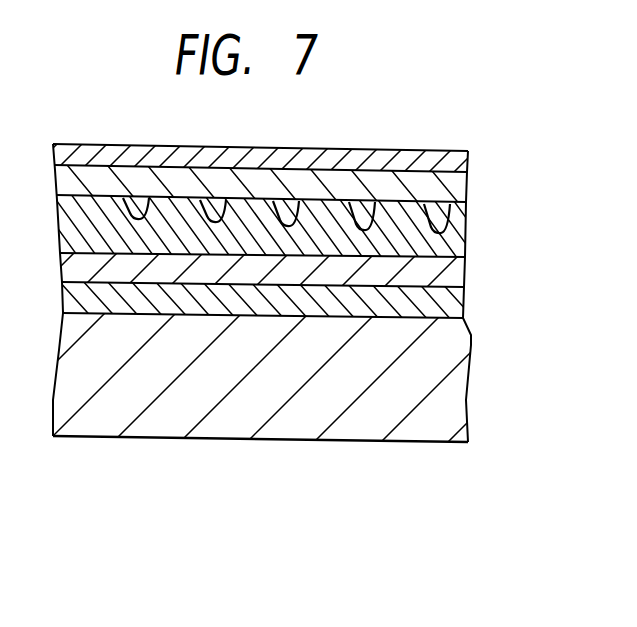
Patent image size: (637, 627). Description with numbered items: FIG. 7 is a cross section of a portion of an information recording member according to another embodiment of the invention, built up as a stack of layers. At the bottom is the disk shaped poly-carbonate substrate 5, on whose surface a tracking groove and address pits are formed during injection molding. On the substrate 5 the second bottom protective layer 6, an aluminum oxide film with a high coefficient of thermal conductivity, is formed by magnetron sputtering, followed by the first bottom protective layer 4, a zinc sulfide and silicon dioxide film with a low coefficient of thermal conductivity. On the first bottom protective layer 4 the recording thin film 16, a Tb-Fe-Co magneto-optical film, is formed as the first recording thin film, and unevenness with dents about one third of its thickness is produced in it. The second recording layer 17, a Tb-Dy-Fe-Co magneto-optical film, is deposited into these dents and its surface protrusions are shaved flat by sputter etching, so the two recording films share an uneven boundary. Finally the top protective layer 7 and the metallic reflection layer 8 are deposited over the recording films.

The metallic reflection layer 8 is at (457, 162).
The top protective layer 7 is at (460, 183).
The second recording layer 17 is at (455, 215).
The recording thin film 16 is at (452, 245).
The first bottom protective layer 4 is at (452, 273).
The second bottom protective layer 6 is at (452, 303).
The poly-carbonate substrate 5 is at (457, 382).